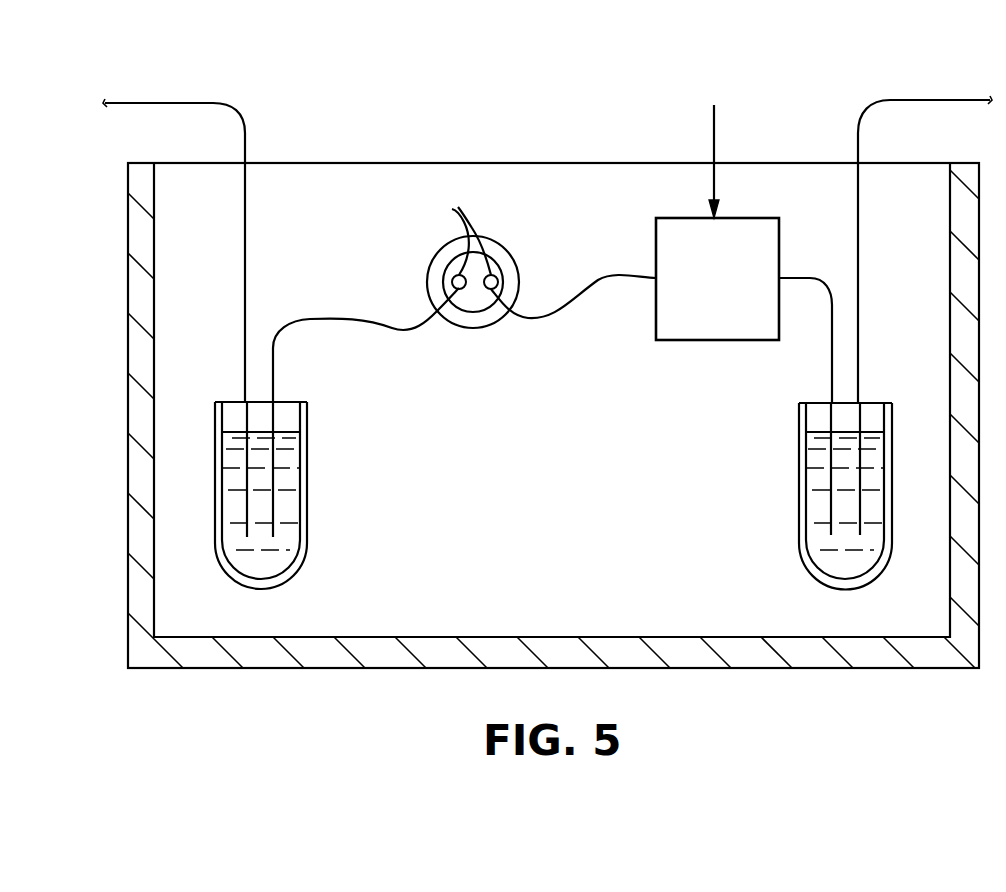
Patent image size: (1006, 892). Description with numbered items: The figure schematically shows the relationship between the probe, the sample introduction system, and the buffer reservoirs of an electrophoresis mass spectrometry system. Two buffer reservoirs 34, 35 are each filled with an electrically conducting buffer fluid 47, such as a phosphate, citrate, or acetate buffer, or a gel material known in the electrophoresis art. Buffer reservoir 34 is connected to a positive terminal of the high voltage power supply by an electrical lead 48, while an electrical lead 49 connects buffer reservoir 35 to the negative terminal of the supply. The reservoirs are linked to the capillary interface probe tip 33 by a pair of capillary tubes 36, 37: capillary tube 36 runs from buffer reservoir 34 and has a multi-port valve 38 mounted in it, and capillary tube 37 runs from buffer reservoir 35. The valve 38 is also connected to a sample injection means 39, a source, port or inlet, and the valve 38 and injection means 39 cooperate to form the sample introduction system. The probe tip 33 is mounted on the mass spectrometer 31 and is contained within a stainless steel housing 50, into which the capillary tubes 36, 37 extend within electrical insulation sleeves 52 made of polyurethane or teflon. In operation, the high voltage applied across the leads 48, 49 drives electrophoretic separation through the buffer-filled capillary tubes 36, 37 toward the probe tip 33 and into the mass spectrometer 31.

The mass spectrometer 31 is at (82, 318).
The capillary interface probe tip 33 is at (420, 239).
The buffer reservoir 34 is at (799, 450).
The buffer reservoir 35 is at (307, 510).
The capillary tube 36 is at (612, 277).
The capillary tube 37 is at (333, 318).
The multi-port valve 38 is at (736, 264).
The sample injection means 39 is at (716, 128).
The electrically conducting buffer fluid 47 is at (284, 458).
The electrical lead 48 is at (900, 100).
The electrical lead 49 is at (232, 110).
The housing 50 is at (498, 243).
The electrical insulation sleeves 52 is at (453, 236).